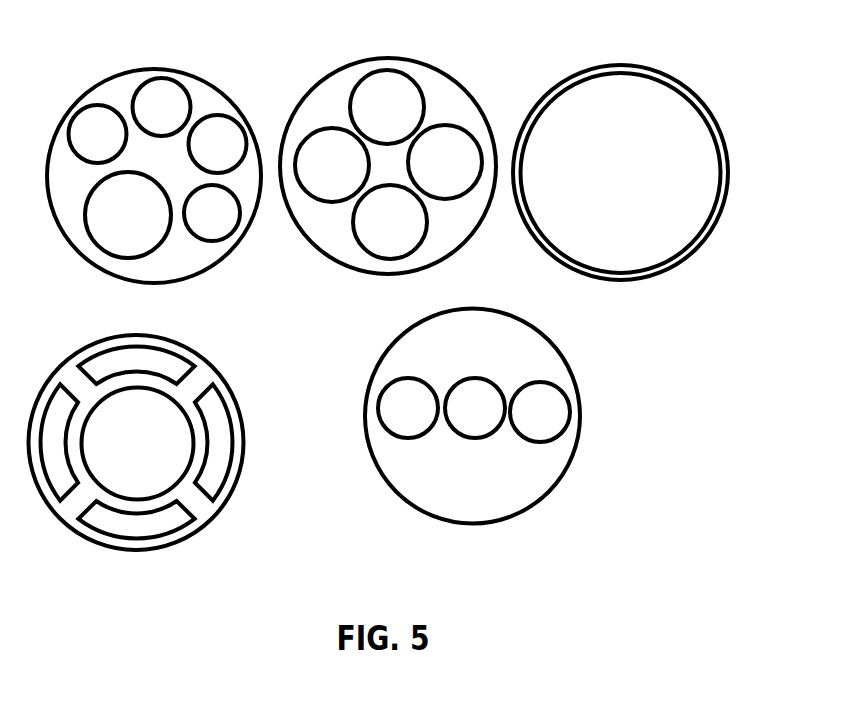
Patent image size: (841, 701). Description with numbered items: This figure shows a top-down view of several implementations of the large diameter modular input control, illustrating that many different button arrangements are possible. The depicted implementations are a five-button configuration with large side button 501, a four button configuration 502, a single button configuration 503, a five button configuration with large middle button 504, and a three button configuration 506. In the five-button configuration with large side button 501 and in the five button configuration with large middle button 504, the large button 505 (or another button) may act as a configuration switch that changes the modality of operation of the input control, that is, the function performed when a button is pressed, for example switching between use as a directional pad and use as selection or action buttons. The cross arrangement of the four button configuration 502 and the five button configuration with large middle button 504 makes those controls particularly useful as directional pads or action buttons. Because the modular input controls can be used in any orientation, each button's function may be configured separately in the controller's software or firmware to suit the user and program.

The five-button configuration with large side button 501 is at (105, 67).
The four button configuration 502 is at (374, 52).
The single button configuration 503 is at (623, 57).
The five button configuration with large middle button 504 is at (96, 331).
The large button 505 is at (107, 230).
The three button configuration 506 is at (466, 300).